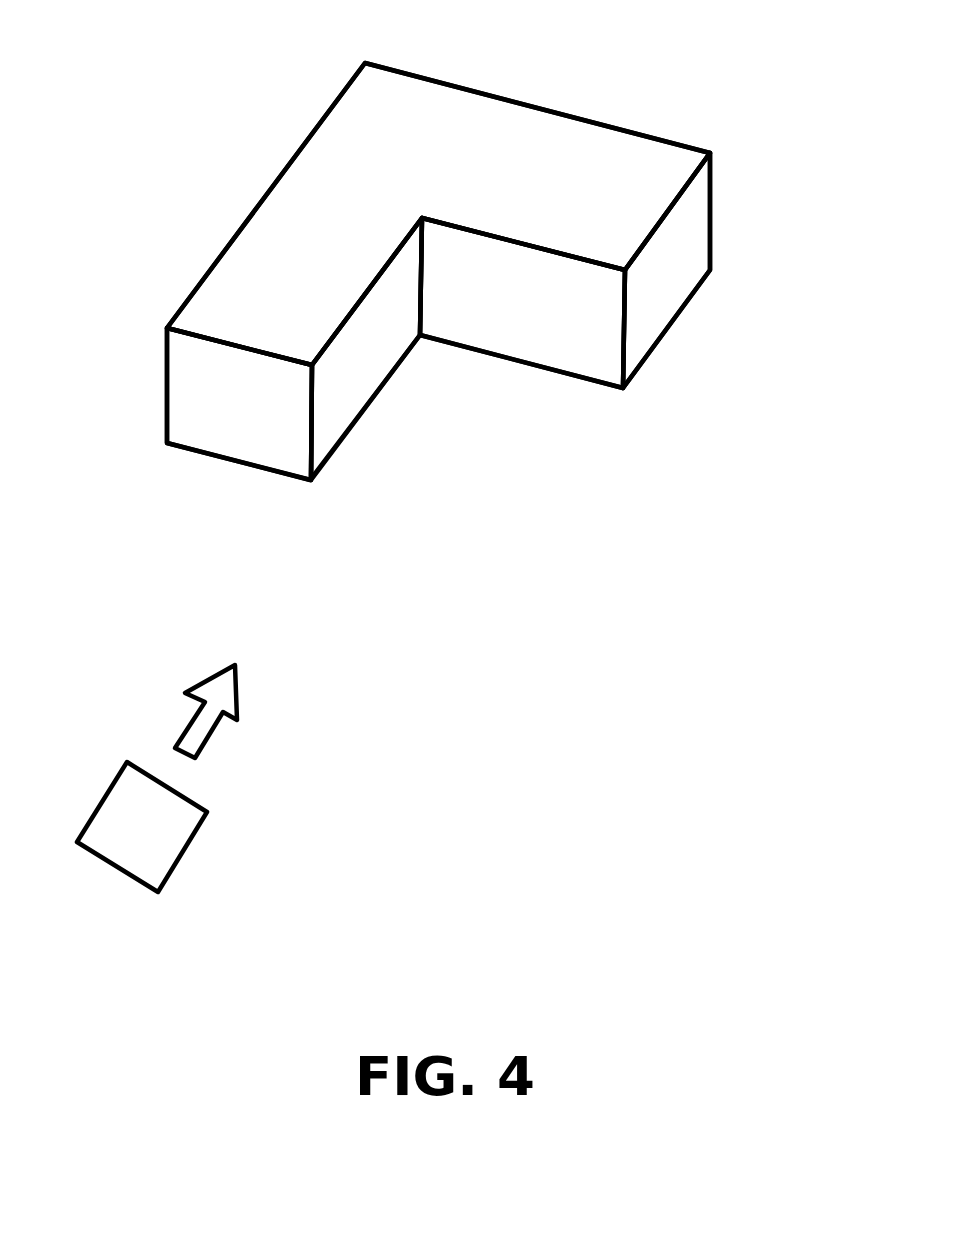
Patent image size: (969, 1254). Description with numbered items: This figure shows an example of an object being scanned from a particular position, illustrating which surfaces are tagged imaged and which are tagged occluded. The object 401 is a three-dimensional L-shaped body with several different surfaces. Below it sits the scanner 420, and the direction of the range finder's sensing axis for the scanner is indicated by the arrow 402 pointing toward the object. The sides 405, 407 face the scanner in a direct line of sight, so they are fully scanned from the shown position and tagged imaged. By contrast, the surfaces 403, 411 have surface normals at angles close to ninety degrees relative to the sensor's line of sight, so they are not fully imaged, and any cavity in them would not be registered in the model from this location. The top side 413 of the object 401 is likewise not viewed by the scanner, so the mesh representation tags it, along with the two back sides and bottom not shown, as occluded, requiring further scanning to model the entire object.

The object 401 is at (713, 147).
The top side 413 is at (302, 175).
The side 405 is at (220, 443).
The surface 403 is at (348, 395).
The side 407 is at (532, 350).
The surface 411 is at (672, 292).
The arrow 402 is at (215, 730).
The scanner 420 is at (187, 848).